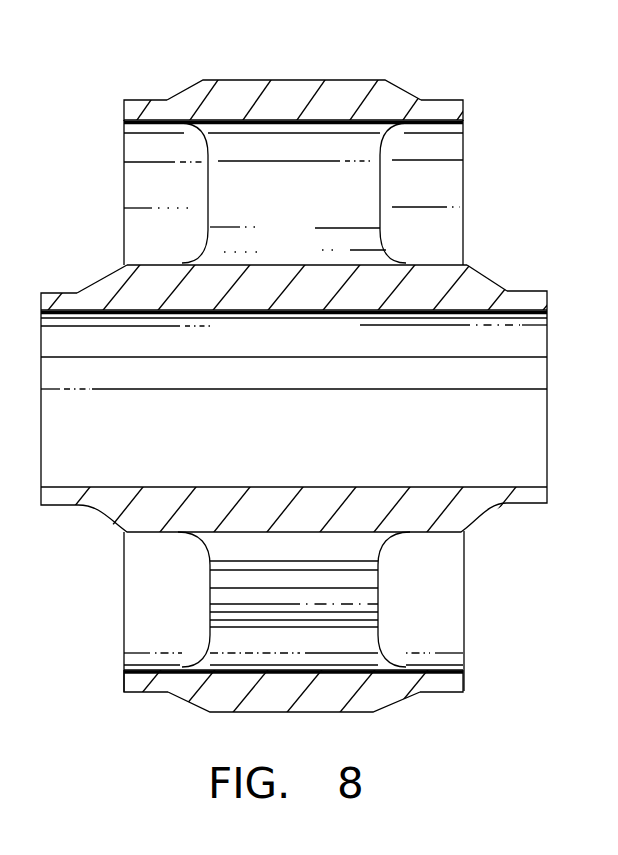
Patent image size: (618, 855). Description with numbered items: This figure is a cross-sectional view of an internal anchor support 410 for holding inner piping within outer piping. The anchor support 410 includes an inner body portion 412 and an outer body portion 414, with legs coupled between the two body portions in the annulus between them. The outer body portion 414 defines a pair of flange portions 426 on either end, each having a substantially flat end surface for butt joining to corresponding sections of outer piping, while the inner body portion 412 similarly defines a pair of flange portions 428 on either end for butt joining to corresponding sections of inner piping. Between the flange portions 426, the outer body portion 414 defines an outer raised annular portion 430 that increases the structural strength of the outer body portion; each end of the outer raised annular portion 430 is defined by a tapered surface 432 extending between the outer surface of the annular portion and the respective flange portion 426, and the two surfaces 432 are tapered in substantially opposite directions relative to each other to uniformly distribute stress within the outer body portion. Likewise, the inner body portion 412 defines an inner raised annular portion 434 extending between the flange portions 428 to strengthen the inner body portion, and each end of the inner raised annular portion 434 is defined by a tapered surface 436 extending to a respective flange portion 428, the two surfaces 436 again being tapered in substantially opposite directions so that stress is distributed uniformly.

The internal anchor support 410 is at (441, 76).
The inner body portion 412 is at (278, 286).
The outer body portion 414 is at (305, 87).
The flange portions 426 is at (123, 101).
The flange portions 428 is at (541, 301).
The outer raised annular portion 430 is at (297, 712).
The tapered surface 432 is at (197, 700).
The inner raised annular portion 434 is at (300, 263).
The tapered surface 436 is at (101, 282).